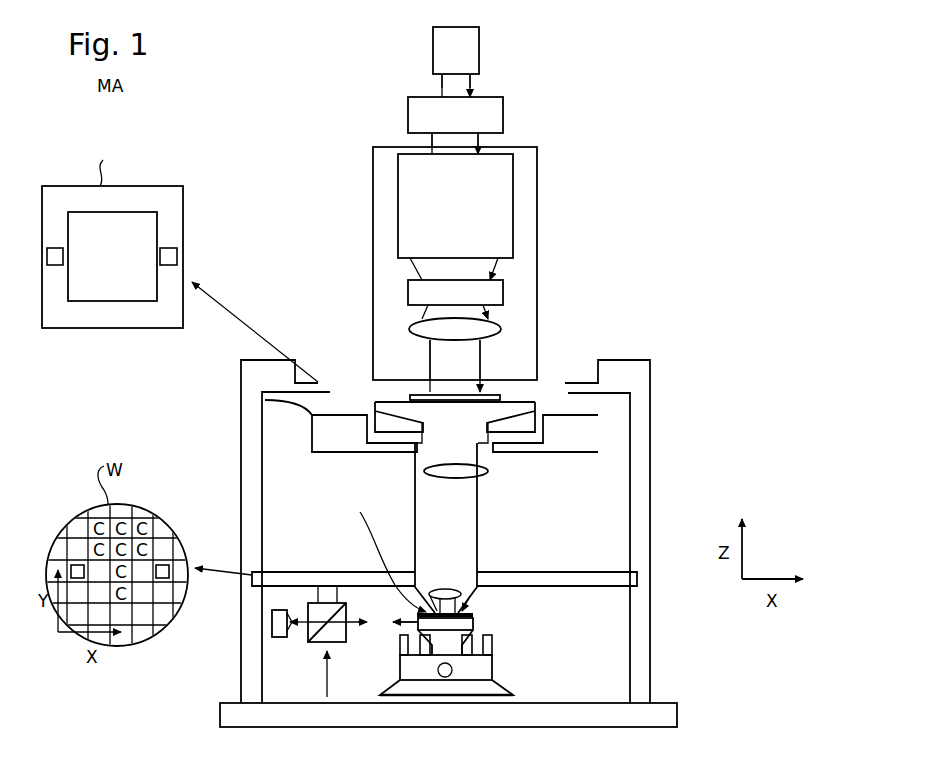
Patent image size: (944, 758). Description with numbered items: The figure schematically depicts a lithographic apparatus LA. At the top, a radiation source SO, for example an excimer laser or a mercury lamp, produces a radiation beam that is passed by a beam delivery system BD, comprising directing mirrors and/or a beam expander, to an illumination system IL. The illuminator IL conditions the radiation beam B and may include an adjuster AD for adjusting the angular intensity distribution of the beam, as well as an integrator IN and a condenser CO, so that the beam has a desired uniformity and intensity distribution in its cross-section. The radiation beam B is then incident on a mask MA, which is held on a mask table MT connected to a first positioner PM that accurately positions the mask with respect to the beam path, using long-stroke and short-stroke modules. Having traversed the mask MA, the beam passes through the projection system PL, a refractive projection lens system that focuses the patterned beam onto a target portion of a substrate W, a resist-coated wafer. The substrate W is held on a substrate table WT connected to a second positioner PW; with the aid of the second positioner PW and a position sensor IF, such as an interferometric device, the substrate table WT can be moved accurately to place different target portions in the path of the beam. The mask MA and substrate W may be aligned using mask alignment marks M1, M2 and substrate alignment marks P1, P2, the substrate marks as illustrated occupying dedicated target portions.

The radiation source SO is at (480, 62).
The beam delivery system BD is at (503, 120).
The illumination system IL is at (538, 168).
The adjuster AD is at (513, 215).
The integrator IN is at (503, 290).
The condenser CO is at (497, 332).
The lithographic apparatus LA is at (661, 270).
The mask MA is at (408, 400).
The radiation beam B is at (500, 396).
The mask table MT is at (513, 410).
The first positioner PM is at (445, 543).
The projection system PL is at (488, 553).
The substrate W is at (410, 600).
The substrate table WT is at (474, 623).
The second positioner PW is at (493, 677).
The position sensor IF is at (301, 651).
The mask alignment mark M1 is at (172, 248).
The mask alignment mark M2 is at (53, 248).
The substrate alignment mark P1 is at (78, 565).
The substrate alignment mark P2 is at (162, 565).